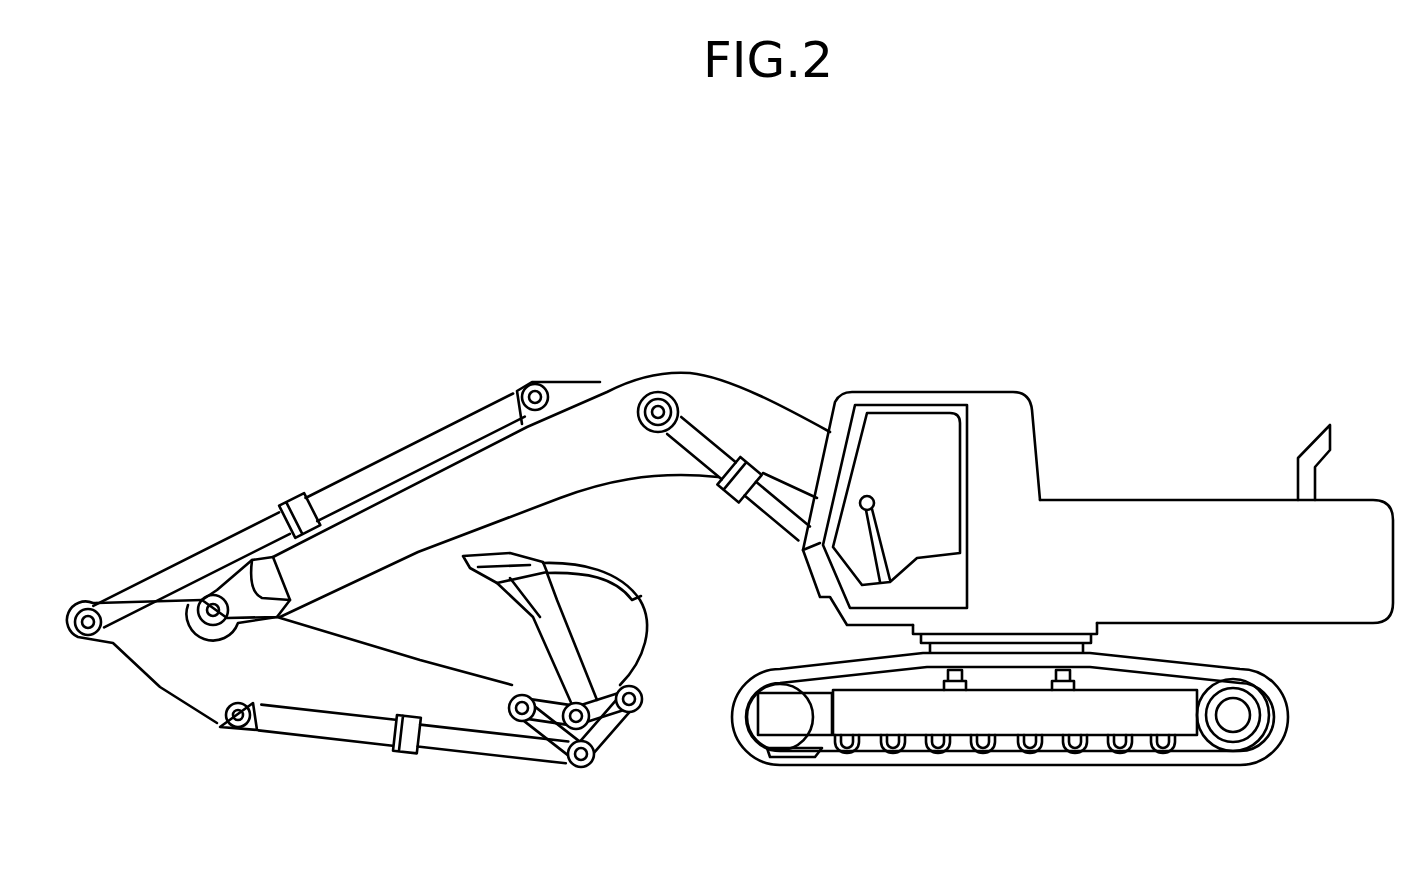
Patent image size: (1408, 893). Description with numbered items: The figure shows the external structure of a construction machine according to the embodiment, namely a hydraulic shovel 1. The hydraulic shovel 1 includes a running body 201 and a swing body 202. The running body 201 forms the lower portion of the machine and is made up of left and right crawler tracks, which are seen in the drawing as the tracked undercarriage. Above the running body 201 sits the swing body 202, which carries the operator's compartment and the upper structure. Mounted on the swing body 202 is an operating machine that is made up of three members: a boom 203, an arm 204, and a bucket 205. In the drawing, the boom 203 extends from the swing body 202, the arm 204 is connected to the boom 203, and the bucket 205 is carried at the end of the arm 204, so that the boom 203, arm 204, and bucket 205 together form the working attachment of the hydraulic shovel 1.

The hydraulic shovel 1 is at (1141, 260).
The running body 201 is at (1098, 712).
The swing body 202 is at (913, 400).
The boom 203 is at (580, 420).
The arm 204 is at (317, 687).
The bucket 205 is at (633, 635).